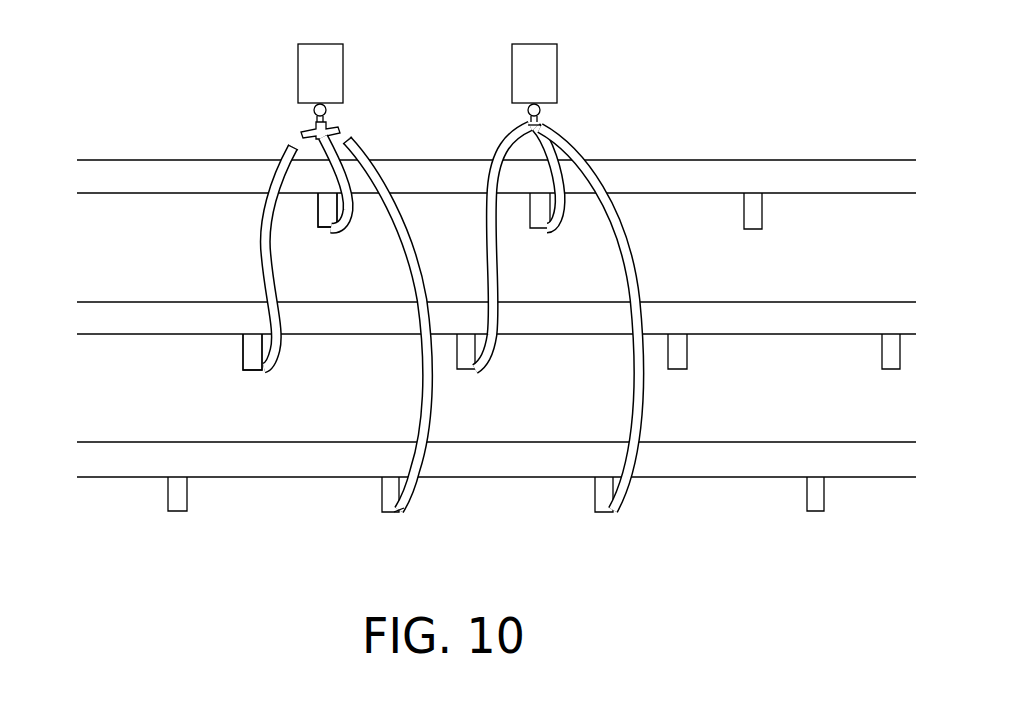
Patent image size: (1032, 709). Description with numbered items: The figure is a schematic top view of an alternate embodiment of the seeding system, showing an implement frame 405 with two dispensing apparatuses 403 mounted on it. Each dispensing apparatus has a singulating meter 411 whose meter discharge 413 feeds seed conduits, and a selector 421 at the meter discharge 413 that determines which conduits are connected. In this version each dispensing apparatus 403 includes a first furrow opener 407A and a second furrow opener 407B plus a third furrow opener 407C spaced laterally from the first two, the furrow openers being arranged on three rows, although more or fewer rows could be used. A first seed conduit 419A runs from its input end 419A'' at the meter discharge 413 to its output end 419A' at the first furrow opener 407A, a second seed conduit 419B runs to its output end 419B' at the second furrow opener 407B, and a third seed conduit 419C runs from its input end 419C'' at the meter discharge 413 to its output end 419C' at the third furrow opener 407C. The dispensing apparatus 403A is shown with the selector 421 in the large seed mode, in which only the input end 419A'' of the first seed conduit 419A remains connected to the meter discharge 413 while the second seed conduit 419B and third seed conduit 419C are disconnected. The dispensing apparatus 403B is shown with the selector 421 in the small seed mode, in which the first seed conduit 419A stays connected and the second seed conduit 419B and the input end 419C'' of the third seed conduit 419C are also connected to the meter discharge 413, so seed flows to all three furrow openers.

The dispensing apparatus 403 is at (652, 240).
The dispensing apparatus 403A is at (150, 209).
The dispensing apparatus 403B is at (496, 352).
The implement frame 405 is at (848, 480).
The first furrow opener 407A is at (312, 226).
The second furrow opener 407B is at (242, 356).
The third furrow opener 407C is at (380, 498).
The singulating meter 411 is at (557, 68).
The meter discharge 413 is at (330, 112).
The selector 421 is at (316, 124).
The first seed conduit 419A is at (637, 318).
The output end of the first seed conduit 419A' is at (556, 205).
The input end of the first seed conduit 419A'' is at (266, 170).
The second seed conduit 419B is at (226, 256).
The output end of the second seed conduit 419B' is at (385, 248).
The third seed conduit 419C is at (373, 323).
The output end of the third seed conduit 419C' is at (446, 523).
The input end of the third seed conduit 419C'' is at (618, 115).